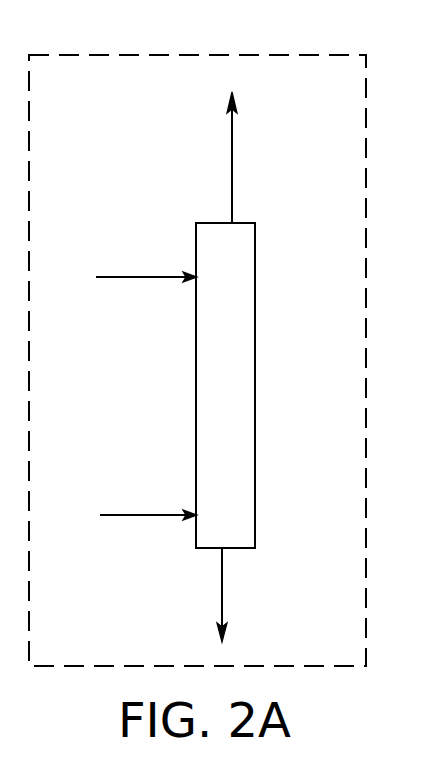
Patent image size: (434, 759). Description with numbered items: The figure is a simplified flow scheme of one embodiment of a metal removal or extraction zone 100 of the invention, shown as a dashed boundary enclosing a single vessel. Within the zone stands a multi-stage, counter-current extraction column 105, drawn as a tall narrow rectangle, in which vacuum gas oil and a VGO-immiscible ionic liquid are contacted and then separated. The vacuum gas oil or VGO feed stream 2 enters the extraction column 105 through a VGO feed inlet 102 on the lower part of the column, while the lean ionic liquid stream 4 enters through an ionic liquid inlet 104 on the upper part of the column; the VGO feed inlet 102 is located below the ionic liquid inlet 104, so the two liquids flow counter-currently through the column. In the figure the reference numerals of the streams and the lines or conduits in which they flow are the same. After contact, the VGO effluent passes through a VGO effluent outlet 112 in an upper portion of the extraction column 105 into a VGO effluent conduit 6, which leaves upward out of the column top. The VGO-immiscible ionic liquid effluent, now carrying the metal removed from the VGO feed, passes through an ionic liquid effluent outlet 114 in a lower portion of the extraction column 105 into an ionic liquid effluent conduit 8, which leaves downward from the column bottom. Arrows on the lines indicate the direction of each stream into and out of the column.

The metal removal or extraction zone 100 is at (100, 55).
The multi-stage, counter-current extraction column 105 is at (207, 223).
The VGO effluent outlet 112 is at (232, 223).
The ionic liquid effluent outlet 114 is at (224, 549).
The ionic liquid inlet 104 is at (196, 283).
The VGO feed inlet 102 is at (196, 508).
The VGO feed stream 2 is at (128, 514).
The lean ionic liquid stream 4 is at (131, 276).
The VGO effluent conduit 6 is at (232, 137).
The ionic liquid effluent conduit 8 is at (222, 585).